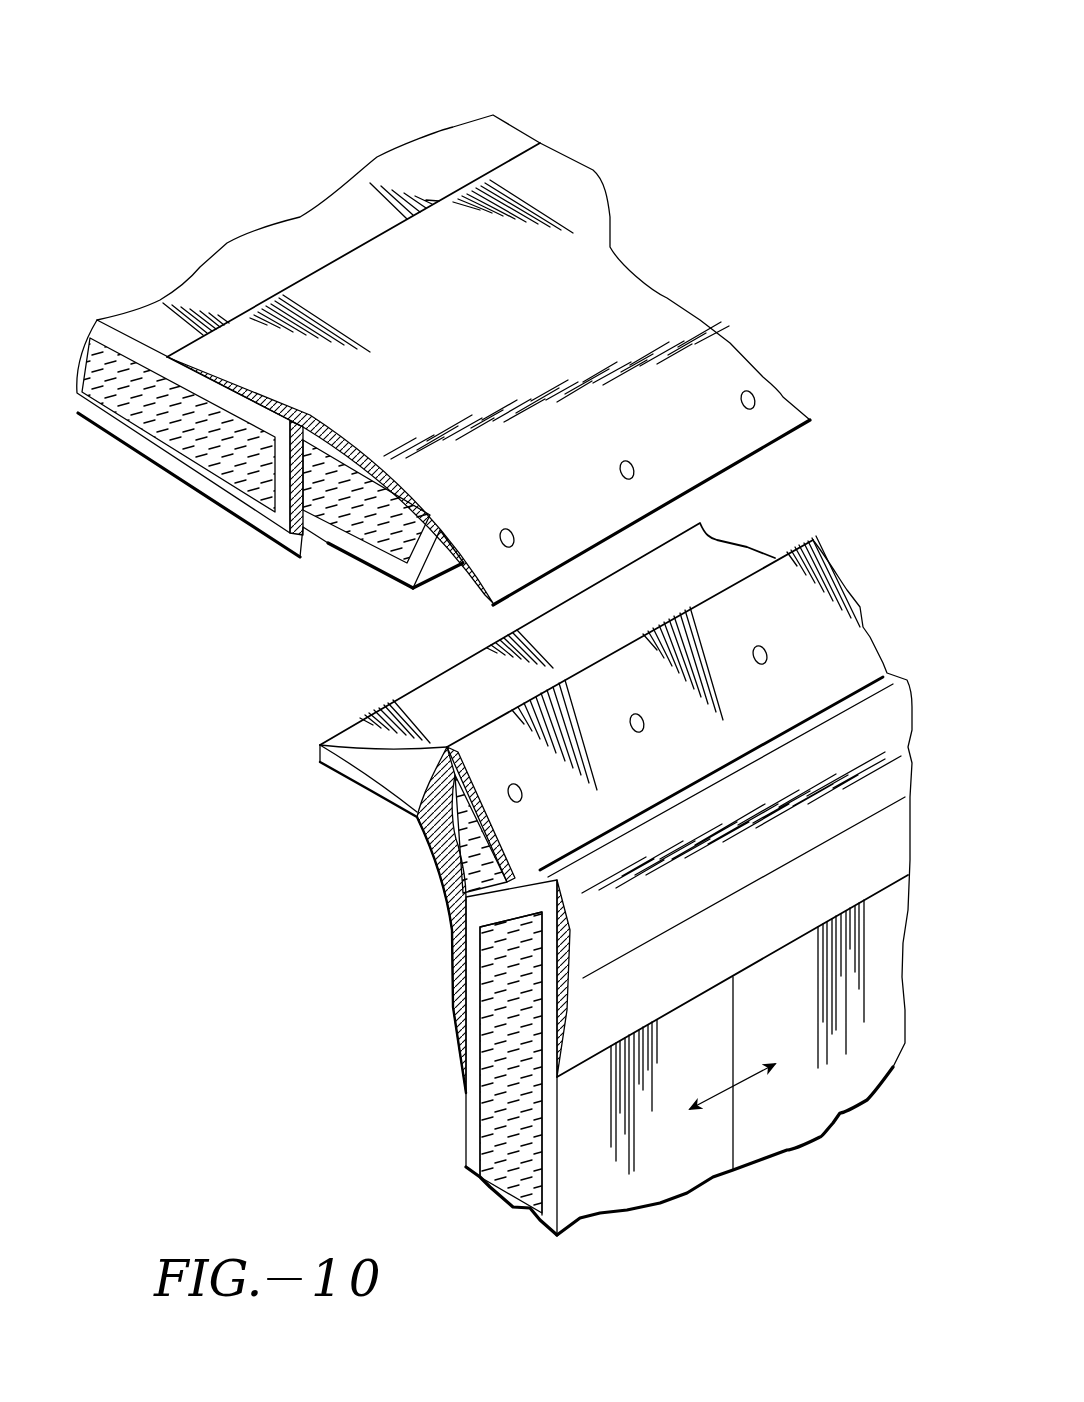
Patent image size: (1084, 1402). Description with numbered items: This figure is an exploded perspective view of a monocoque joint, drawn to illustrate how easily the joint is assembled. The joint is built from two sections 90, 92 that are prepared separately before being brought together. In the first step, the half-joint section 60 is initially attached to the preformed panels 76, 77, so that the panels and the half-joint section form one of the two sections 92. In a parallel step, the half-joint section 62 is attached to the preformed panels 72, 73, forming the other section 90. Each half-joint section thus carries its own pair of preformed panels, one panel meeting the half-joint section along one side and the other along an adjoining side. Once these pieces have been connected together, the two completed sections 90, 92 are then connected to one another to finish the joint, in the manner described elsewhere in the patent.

The section 90 is at (376, 121).
The half-joint section 62 is at (565, 268).
The preformed panel 73 is at (492, 143).
The preformed panel 72 is at (166, 434).
The section 92 is at (930, 964).
The half-joint section 60 is at (830, 616).
The preformed panel 77 is at (838, 1097).
The preformed panel 76 is at (487, 1143).